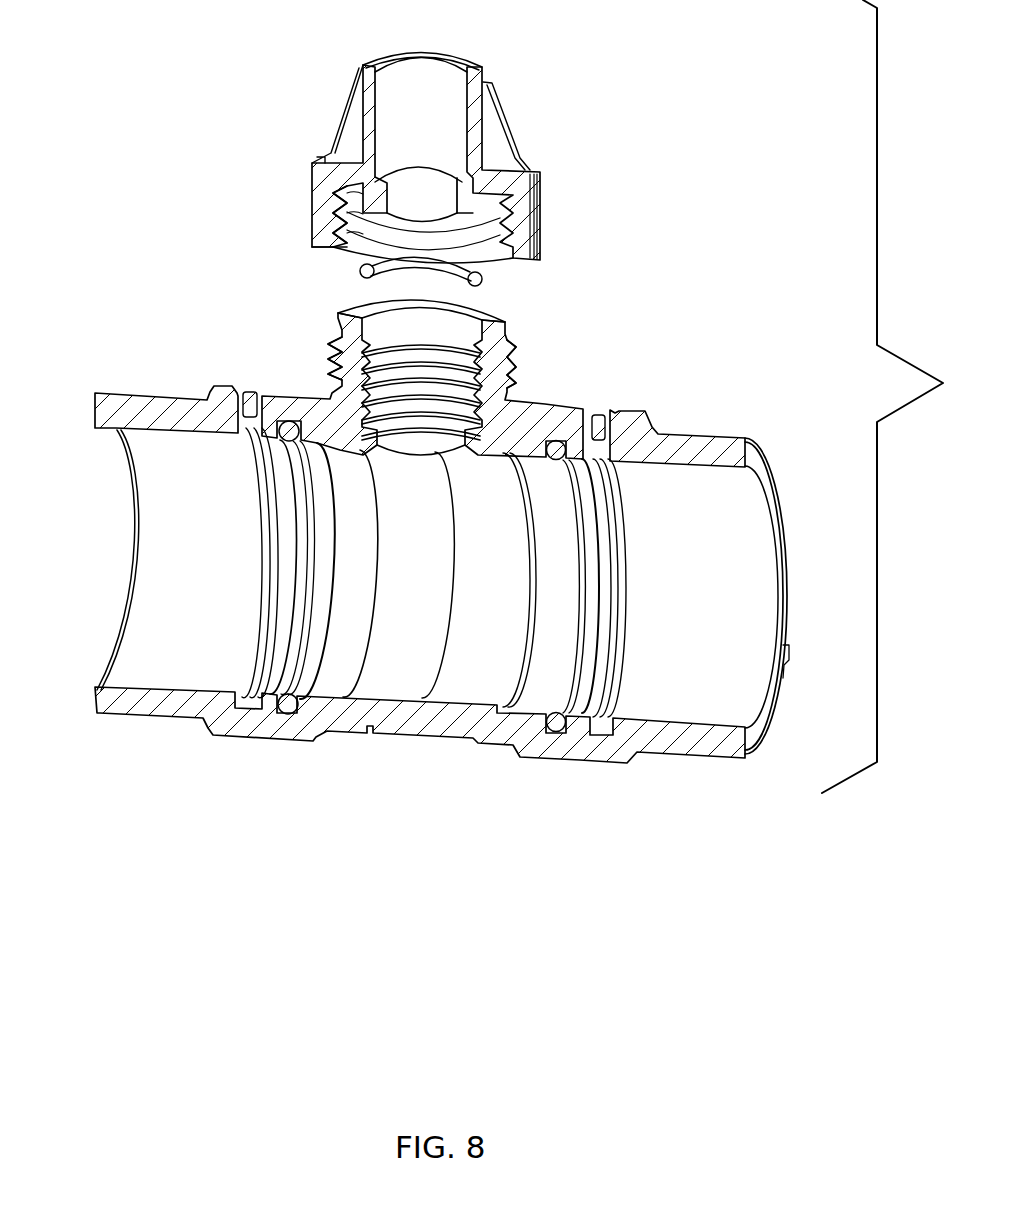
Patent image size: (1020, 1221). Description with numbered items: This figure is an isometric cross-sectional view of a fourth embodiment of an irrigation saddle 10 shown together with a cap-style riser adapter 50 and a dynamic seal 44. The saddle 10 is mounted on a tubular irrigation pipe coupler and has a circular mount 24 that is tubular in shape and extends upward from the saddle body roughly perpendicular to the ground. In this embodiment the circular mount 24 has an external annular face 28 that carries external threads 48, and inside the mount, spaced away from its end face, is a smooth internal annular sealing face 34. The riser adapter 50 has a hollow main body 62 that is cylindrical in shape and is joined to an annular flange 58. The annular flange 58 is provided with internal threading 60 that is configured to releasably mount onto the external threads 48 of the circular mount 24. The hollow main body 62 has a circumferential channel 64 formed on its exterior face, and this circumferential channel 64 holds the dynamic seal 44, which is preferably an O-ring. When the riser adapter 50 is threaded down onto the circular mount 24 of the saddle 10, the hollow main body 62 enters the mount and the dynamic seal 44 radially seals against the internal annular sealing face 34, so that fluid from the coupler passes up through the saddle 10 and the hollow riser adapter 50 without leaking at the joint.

The saddle 10 is at (547, 347).
The circular mount 24 is at (350, 347).
The external annular face 28 is at (506, 397).
The internal annular sealing face 34 is at (410, 322).
The dynamic seal 44 is at (482, 282).
The external threads 48 is at (513, 371).
The cap-style riser adapter 50 is at (533, 112).
The annular flange 58 is at (527, 200).
The internal threading 60 is at (334, 240).
The hollow main body 62 is at (462, 205).
The circumferential channel 64 is at (340, 195).